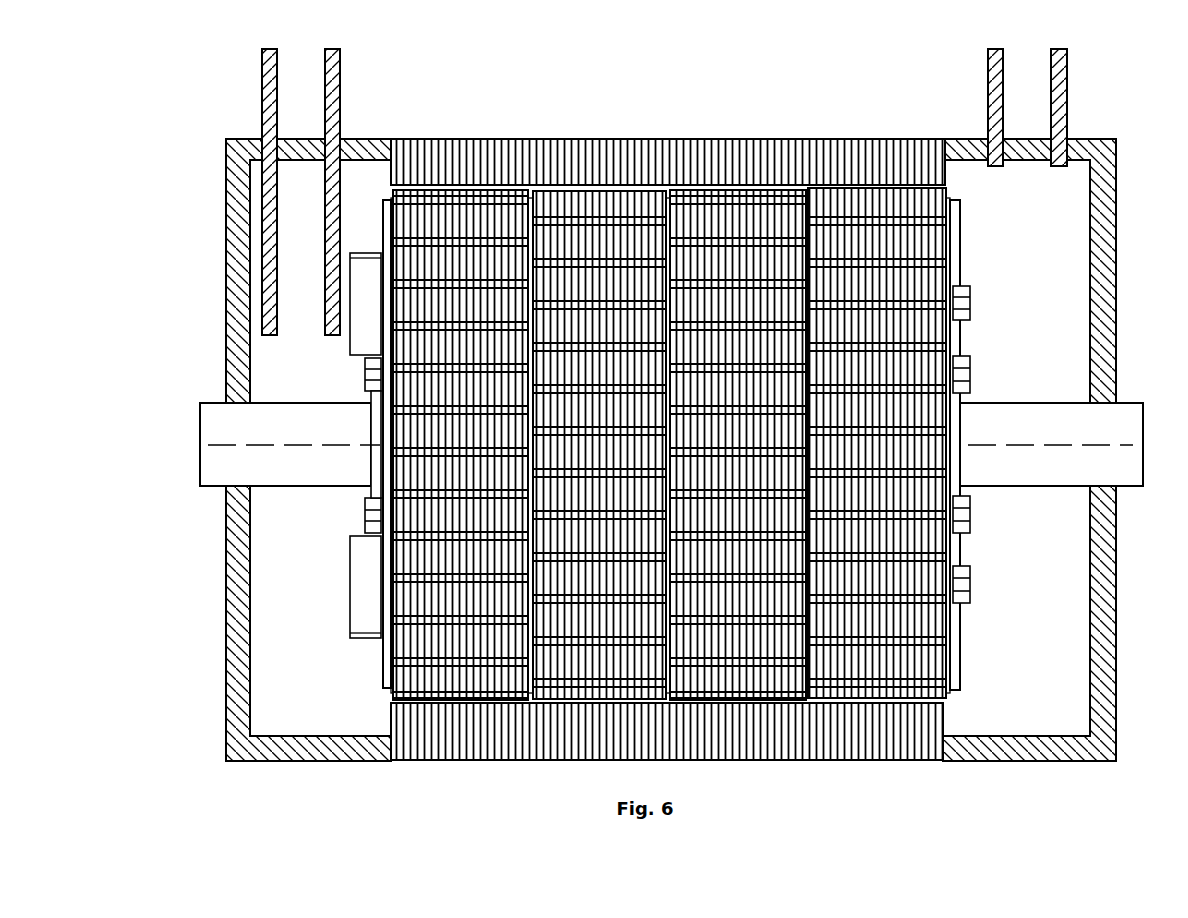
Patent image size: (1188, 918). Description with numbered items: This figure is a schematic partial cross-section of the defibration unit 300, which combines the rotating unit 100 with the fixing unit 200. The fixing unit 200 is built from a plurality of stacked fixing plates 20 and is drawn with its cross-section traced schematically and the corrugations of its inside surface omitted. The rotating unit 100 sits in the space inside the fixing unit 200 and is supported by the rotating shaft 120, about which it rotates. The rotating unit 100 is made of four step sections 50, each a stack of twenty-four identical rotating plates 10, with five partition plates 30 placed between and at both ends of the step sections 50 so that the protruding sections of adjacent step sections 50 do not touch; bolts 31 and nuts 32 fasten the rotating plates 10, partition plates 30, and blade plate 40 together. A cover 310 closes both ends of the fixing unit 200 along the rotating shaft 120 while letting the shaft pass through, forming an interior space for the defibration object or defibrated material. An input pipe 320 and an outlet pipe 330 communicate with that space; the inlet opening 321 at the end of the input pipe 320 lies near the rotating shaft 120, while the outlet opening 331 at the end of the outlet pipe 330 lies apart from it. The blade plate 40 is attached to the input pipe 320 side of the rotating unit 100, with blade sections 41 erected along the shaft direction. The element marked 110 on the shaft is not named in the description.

The rotating plate 10 is at (498, 182).
The fixing plate 20 is at (712, 404).
The fixing unit 200 is at (440, 178).
The partition plate 30 is at (520, 128).
The bolt 31 is at (998, 466).
The nut 32 is at (952, 600).
The blade plate 40 is at (375, 658).
The blade section 41 is at (358, 582).
The step section 50 is at (681, 388).
The rotating unit 100 is at (671, 388).
The rotating shaft 110 is at (690, 444).
The rotating shaft 120 is at (1103, 420).
The defibration unit 300 is at (666, 405).
The cover 310 is at (230, 196).
The input pipe 320 is at (273, 72).
The inlet opening 321 is at (287, 328).
The outlet pipe 330 is at (1003, 72).
The outlet opening 331 is at (1027, 155).